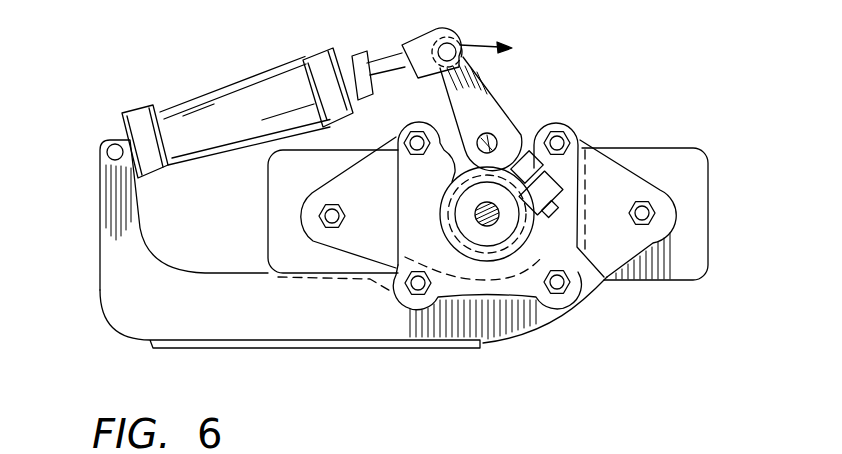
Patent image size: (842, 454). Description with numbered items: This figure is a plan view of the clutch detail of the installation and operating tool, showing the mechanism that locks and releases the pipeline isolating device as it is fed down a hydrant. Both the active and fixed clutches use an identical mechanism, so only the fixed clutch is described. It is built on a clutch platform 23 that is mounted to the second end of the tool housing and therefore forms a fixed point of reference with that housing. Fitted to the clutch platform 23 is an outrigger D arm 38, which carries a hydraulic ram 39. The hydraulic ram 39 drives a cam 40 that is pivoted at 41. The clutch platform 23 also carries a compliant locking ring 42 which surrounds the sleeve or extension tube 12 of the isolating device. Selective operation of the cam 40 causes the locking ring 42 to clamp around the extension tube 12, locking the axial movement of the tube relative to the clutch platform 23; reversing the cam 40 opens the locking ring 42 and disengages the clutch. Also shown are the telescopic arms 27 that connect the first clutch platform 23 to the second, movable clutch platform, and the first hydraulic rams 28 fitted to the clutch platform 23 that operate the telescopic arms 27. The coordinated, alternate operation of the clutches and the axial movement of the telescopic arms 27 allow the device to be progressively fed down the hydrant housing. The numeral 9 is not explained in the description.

The hub 9 is at (497, 215).
The extension tube 12 is at (461, 243).
The clutch platform 23 is at (575, 325).
The telescopic arms 27 is at (332, 216).
The first hydraulic rams 28 is at (287, 173).
The outrigger D arm 38 is at (110, 235).
The hydraulic ram 39 is at (215, 108).
The cam 40 is at (481, 98).
The pivot 41 is at (497, 138).
The compliant locking ring 42 is at (497, 238).